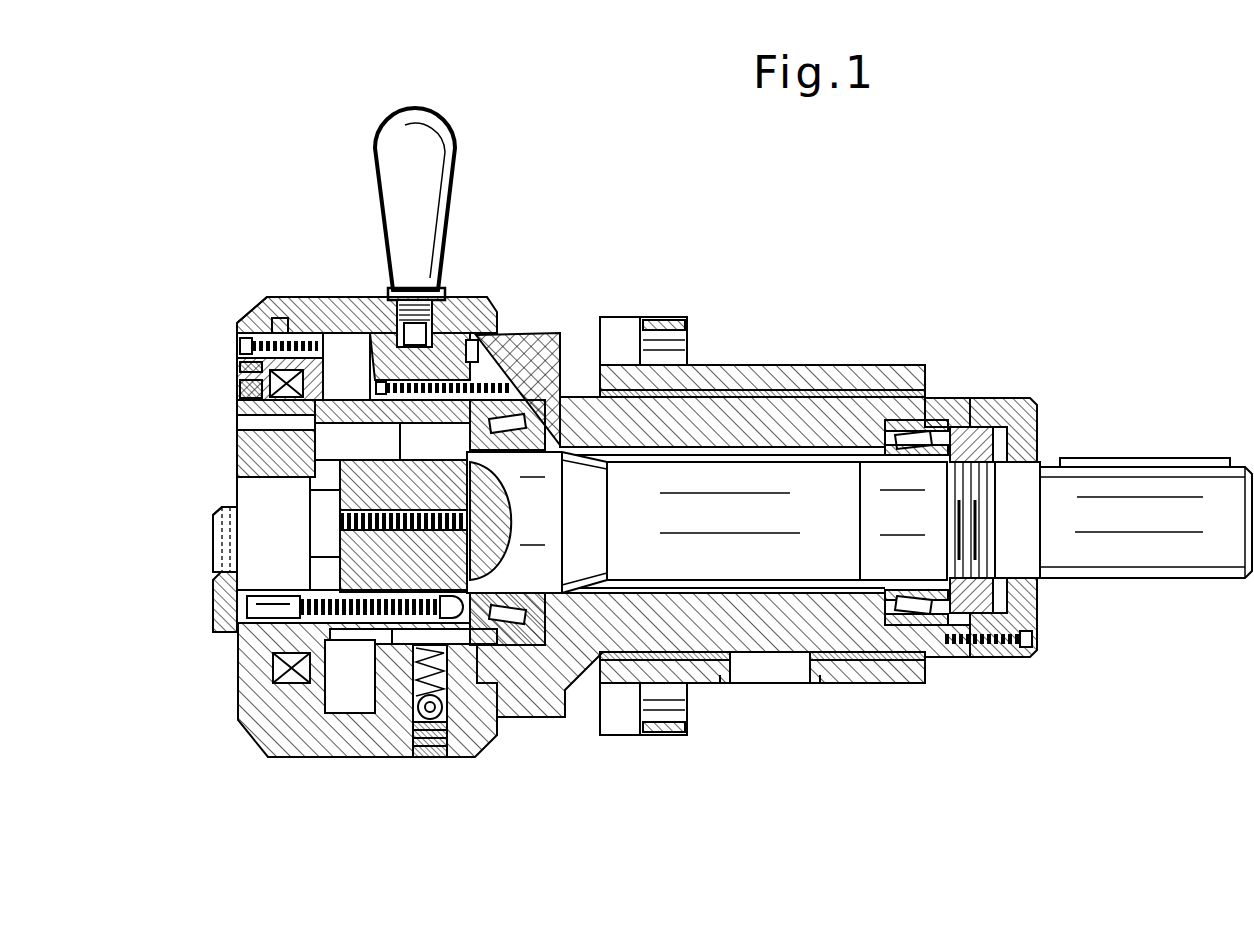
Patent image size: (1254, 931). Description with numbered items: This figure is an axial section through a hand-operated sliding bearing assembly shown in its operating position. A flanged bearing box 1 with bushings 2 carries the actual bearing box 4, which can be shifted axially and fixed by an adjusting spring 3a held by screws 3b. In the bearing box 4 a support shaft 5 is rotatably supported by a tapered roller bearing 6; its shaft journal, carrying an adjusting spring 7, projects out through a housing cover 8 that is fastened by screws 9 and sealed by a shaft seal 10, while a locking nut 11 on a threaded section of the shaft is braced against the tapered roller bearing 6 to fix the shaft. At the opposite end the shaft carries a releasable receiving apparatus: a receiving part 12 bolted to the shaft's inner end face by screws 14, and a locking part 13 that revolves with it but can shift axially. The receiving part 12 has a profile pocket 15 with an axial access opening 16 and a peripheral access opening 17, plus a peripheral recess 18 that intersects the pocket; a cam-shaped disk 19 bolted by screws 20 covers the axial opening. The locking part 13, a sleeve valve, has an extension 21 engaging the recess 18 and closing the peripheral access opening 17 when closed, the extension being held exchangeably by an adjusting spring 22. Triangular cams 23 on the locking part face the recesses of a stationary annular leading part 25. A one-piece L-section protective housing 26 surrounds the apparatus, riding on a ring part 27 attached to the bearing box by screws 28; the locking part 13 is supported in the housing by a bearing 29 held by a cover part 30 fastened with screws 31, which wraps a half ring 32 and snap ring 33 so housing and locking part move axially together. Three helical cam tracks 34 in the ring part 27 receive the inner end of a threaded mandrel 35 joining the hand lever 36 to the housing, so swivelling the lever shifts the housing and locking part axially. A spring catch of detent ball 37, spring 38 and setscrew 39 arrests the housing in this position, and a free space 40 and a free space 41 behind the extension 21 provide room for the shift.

The flanged bearing box 1 is at (690, 368).
The bushings 2 is at (858, 390).
The adjusting spring 3a is at (778, 668).
The screws 3b is at (720, 693).
The bearing box 4 is at (540, 693).
The support shaft 5 is at (1088, 493).
The tapered roller bearing 6 is at (540, 395).
The adjusting spring 7 is at (1163, 465).
The housing cover 8 is at (1020, 400).
The screws 9 is at (1033, 637).
The shaft seal 10 is at (1030, 425).
The locking nut 11 is at (977, 418).
The receiving part 12 is at (432, 497).
The locking part 13 is at (262, 400).
The screws 14 is at (255, 645).
The profile pocket 15 is at (258, 491).
The axial access opening 16 is at (220, 507).
The peripheral access opening 17 is at (248, 470).
The recess 18 is at (335, 478).
The cam-shaped disk 19 is at (218, 603).
The screws 20 is at (217, 537).
The extension 21 is at (283, 450).
The adjusting spring 22 is at (255, 427).
The cams 23 is at (375, 355).
The leading part 25 is at (500, 385).
The protective housing 26 is at (335, 310).
The ring part 27 is at (457, 363).
The screws 28 is at (470, 352).
The bearing 29 is at (280, 327).
The cover part 30 is at (262, 328).
The screws 31 is at (240, 350).
The half ring 32 is at (252, 392).
The snap ring 33 is at (240, 360).
The cam track 34 is at (422, 350).
The threaded mandrel 35 is at (388, 262).
The hand lever 36 is at (400, 130).
The detent ball 37 is at (438, 728).
The spring 38 is at (466, 714).
The setscrew 39 is at (422, 738).
The free space 40 is at (362, 692).
The free space 41 is at (363, 437).